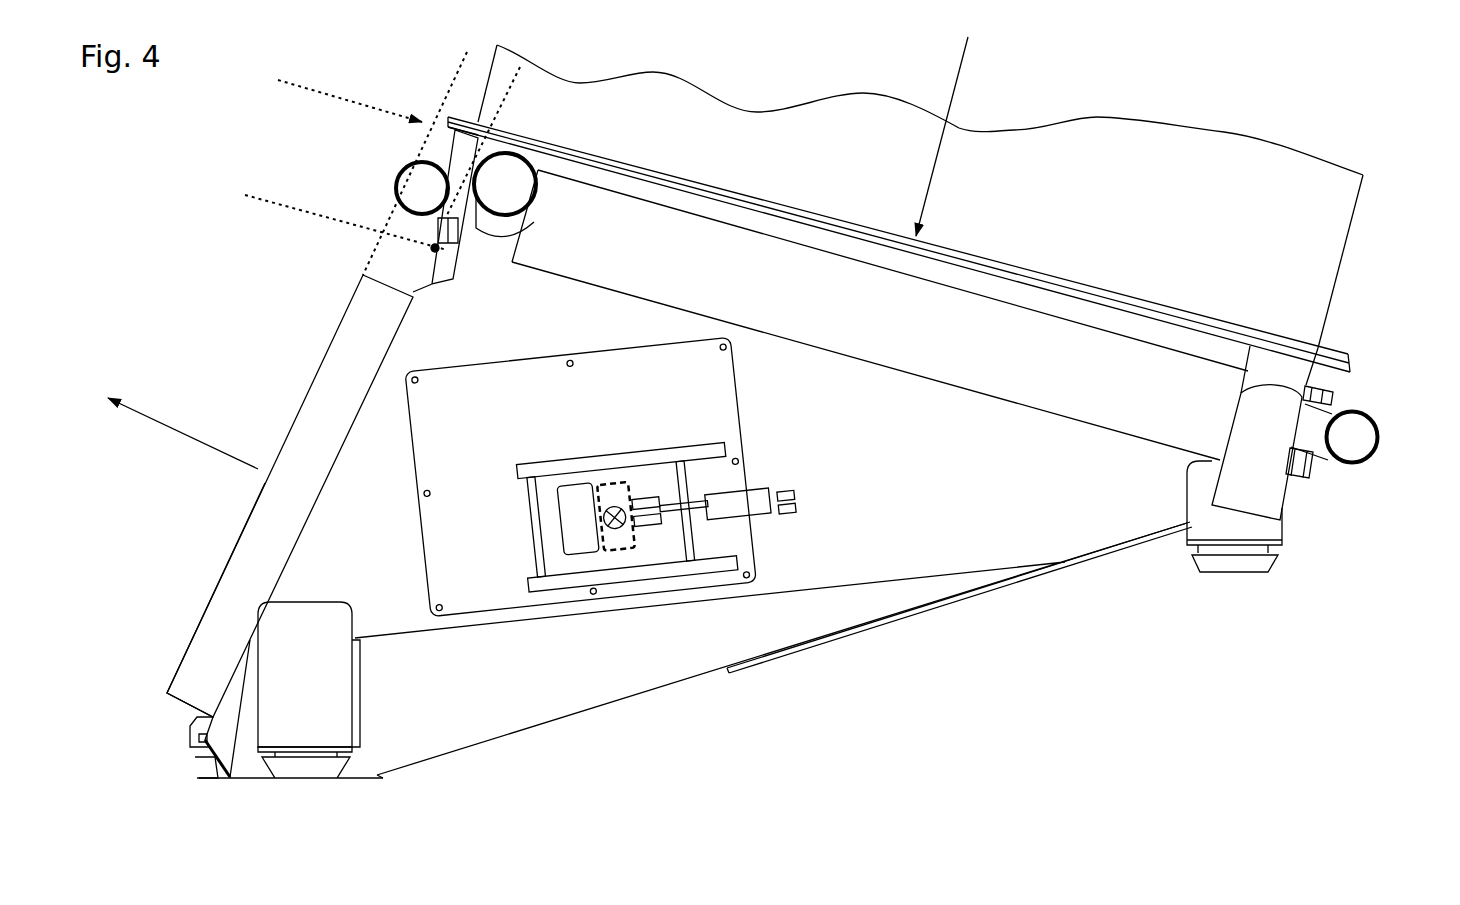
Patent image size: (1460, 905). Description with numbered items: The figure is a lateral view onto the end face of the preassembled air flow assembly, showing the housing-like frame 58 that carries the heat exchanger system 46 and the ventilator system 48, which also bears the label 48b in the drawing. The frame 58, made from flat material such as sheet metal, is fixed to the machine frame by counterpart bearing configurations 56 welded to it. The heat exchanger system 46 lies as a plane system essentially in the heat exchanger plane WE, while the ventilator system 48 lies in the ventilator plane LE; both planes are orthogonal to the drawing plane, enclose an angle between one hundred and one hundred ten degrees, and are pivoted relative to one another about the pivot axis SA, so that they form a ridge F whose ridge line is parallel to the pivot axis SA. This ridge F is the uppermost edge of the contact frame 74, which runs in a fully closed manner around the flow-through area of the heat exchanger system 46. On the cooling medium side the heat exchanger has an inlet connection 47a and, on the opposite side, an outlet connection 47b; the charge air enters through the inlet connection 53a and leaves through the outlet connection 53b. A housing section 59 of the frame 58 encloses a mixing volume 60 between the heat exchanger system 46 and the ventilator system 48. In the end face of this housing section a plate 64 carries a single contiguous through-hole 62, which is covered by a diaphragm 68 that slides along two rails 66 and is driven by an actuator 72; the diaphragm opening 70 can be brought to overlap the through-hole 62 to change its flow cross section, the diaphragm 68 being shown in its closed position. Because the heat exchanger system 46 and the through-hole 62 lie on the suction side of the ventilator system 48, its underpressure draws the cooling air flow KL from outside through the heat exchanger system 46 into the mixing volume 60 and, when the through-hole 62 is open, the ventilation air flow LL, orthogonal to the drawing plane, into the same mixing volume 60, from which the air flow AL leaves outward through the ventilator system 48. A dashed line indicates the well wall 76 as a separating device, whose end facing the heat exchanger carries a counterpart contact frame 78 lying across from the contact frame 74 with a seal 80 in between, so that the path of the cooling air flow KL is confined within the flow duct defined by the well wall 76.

The heat exchanger system 46 is at (1084, 257).
The inlet connection 47a is at (424, 194).
The outlet connection 47b is at (1352, 440).
The ventilator system 48 is at (288, 370).
The lower end of support arm 48b is at (202, 550).
The inlet connection 53a is at (505, 185).
The outlet connection 53b is at (1262, 452).
The counterpart bearing configuration 56 is at (273, 794).
The frame 58 is at (710, 705).
The housing section 59 is at (978, 596).
The mixing volume 60 is at (989, 468).
The through-hole 62 is at (626, 558).
The plate 64 is at (449, 560).
The rails 66 is at (528, 583).
The diaphragm 68 is at (540, 530).
The diaphragm opening 70 is at (568, 538).
The actuator 72 is at (770, 480).
The contact frame 74 is at (447, 135).
The well wall 76 is at (1358, 325).
The counterpart contact frame 78 is at (660, 170).
The seal 80 is at (437, 120).
The cooling air flow KL is at (946, 98).
The ventilator plane LE is at (456, 76).
The ridge F is at (405, 116).
The heat exchanger plane WE is at (285, 160).
The pivot axis SA is at (433, 247).
The air flow AL is at (175, 430).
The ventilation air flow LL is at (614, 506).